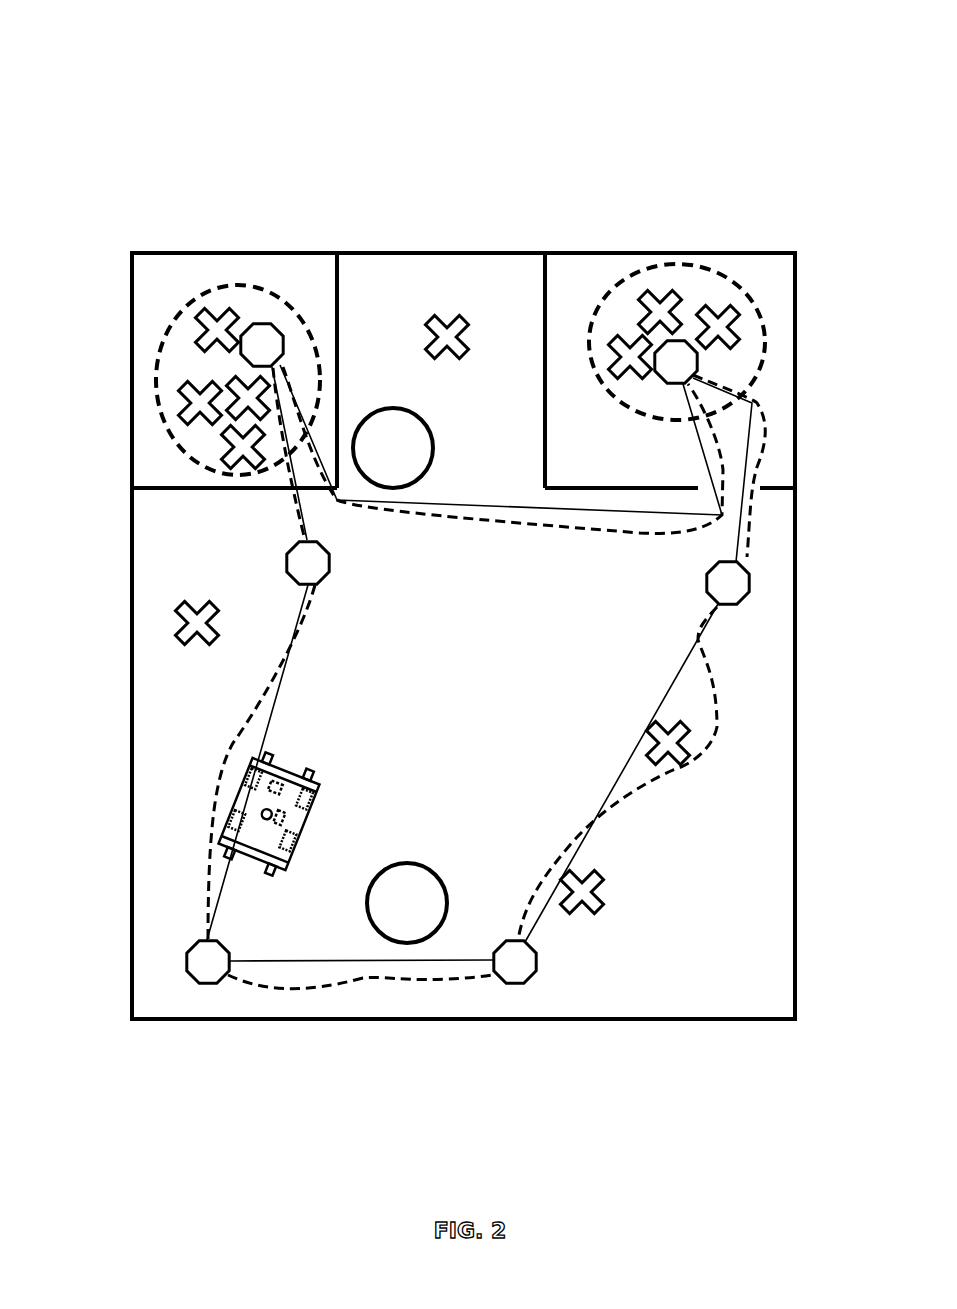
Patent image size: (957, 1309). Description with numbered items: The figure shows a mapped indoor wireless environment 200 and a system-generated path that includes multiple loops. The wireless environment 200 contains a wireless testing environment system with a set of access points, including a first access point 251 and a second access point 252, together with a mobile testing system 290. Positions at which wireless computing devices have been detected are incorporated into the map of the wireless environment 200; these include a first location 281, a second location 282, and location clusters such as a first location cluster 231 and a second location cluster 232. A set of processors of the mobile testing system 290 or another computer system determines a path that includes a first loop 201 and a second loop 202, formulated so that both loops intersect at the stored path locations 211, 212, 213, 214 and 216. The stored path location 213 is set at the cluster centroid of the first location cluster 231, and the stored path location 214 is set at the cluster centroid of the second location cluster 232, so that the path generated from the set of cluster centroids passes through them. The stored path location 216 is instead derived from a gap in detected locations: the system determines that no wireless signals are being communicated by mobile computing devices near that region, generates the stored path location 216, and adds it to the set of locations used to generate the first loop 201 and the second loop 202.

The wireless environment 200 is at (449, 31).
The first loop 201 is at (680, 680).
The second loop 202 is at (717, 732).
The stored path location 211 is at (515, 985).
The stored path location 212 is at (750, 583).
The stored path location 213 is at (698, 362).
The stored path location 214 is at (272, 323).
The stored path location 216 is at (208, 985).
The first location cluster 231 is at (718, 272).
The second location cluster 232 is at (237, 285).
The first access point 251 is at (407, 903).
The second access point 252 is at (393, 448).
The first location 281 is at (596, 872).
The second location 282 is at (175, 632).
The mobile testing system 290 is at (227, 815).